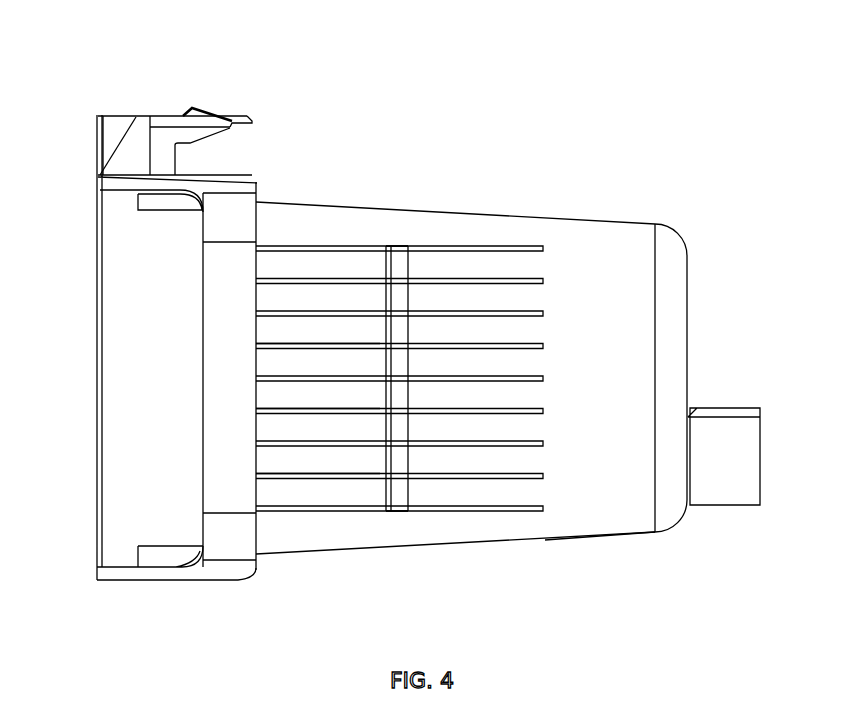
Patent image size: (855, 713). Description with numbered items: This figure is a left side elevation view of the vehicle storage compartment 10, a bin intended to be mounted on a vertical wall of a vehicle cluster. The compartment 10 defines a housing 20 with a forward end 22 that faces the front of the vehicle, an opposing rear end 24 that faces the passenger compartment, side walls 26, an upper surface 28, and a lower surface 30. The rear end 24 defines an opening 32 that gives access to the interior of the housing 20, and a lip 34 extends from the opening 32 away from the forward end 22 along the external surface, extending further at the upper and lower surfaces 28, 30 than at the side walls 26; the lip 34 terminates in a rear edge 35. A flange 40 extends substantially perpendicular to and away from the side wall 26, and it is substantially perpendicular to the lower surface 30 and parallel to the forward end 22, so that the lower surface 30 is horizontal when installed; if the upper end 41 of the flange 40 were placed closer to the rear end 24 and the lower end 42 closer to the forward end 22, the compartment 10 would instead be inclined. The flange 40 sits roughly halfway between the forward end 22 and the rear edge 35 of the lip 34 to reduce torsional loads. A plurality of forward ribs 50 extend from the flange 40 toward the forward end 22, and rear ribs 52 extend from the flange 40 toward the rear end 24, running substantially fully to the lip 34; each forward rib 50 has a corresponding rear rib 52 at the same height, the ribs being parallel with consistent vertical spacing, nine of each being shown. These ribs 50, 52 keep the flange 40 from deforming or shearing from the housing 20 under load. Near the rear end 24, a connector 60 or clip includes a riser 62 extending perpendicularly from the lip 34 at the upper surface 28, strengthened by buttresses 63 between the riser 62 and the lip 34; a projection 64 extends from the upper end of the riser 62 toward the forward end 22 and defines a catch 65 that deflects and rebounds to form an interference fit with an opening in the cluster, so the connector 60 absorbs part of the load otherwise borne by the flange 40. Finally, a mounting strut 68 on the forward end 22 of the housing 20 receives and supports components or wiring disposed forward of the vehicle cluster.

The vehicle storage compartment 10 is at (592, 103).
The housing 20 is at (506, 373).
The forward end 22 is at (687, 337).
The rear end 24 is at (257, 493).
The side walls 26 is at (595, 517).
The upper surface 28 is at (455, 210).
The lower surface 30 is at (457, 547).
The opening 32 is at (136, 347).
The lip 34 is at (172, 396).
The rear edge of the lip 35 is at (116, 181).
The flanges 40 is at (406, 353).
The upper end of the flange 41 is at (403, 236).
The lower end of the flange 42 is at (402, 519).
The forward ribs 50 is at (475, 377).
The rear ribs 52 is at (320, 347).
The connector 60 is at (174, 95).
The riser 62 is at (162, 155).
The buttresses 63 is at (133, 147).
The projection 64 is at (207, 123).
The catch 65 is at (192, 108).
The mounting strut 68 is at (740, 463).